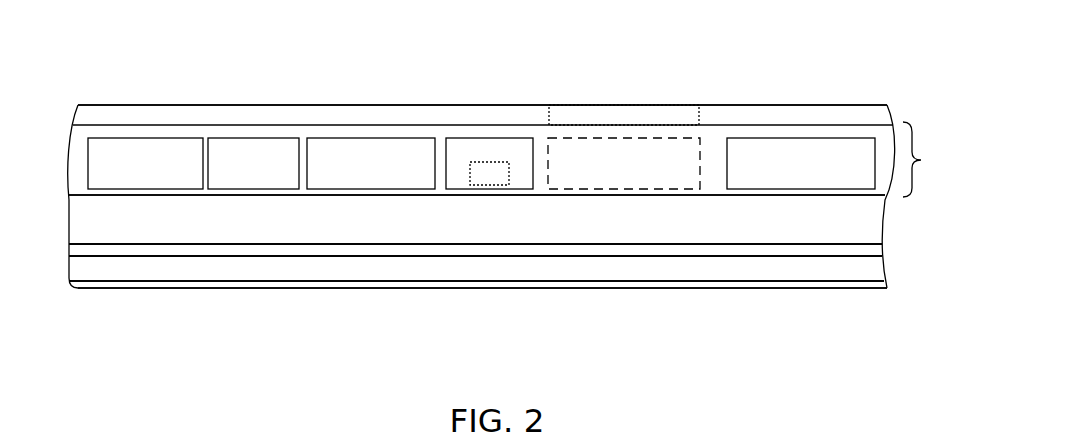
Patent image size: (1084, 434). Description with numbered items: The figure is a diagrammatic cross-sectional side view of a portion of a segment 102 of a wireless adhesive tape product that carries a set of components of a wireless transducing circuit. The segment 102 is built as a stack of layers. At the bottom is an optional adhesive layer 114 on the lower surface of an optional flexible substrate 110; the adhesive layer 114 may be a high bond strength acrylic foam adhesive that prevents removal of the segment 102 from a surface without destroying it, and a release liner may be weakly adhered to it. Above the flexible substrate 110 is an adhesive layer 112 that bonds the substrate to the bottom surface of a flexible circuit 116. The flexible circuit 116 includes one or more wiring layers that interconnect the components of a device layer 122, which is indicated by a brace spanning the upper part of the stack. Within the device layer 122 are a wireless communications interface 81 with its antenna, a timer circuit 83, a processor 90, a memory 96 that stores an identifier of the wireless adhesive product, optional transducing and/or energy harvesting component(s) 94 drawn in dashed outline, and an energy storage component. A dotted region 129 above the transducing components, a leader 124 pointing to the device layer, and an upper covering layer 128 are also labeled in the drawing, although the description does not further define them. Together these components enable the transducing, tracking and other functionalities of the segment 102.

The segment 102 is at (840, 60).
The top layer 128 is at (313, 115).
The device layer 122 is at (903, 125).
The wireless communications interface 81 is at (142, 138).
The timer circuit 83 is at (235, 138).
The processor 90 is at (360, 138).
The memory 96 is at (498, 138).
The transducing and/or energy harvesting component(s) 94 is at (648, 189).
The transducer region 129 is at (597, 117).
The energy storage 124 is at (717, 145).
The flexible circuit 116 is at (582, 231).
The adhesive layer 112 is at (110, 248).
The flexible substrate 110 is at (210, 265).
The adhesive layer 114 is at (170, 285).